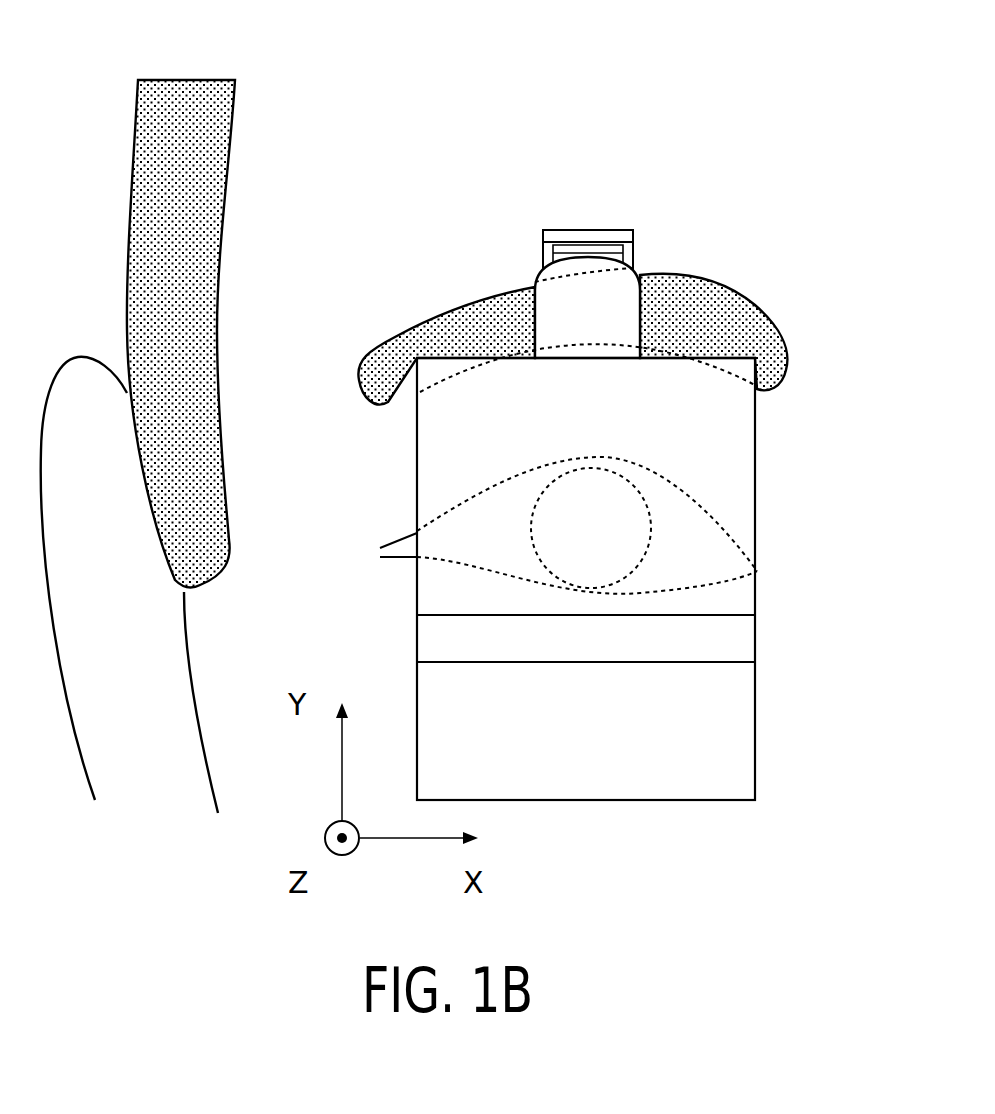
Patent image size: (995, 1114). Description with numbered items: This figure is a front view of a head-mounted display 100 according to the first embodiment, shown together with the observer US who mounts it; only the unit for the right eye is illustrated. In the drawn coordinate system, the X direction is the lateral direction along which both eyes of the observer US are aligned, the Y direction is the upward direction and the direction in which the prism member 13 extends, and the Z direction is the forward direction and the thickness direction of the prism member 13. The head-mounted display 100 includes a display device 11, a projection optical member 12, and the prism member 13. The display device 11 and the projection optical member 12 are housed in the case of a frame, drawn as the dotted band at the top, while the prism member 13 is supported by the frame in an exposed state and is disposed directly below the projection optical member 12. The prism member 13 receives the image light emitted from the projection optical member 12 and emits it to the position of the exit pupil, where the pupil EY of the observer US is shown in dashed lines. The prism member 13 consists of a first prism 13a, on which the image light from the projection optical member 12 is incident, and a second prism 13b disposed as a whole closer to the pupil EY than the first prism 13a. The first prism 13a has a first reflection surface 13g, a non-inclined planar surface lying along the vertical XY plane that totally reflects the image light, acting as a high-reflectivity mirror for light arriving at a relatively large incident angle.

The observer US is at (133, 153).
The head-mounted display 100 is at (606, 495).
The display device 11 is at (583, 235).
The projection optical member 12 is at (557, 312).
The prism member 13 is at (606, 511).
The first prism 13a is at (702, 410).
The first reflection surface 13g is at (690, 460).
The second prism 13b is at (685, 780).
The pupil EY is at (572, 545).